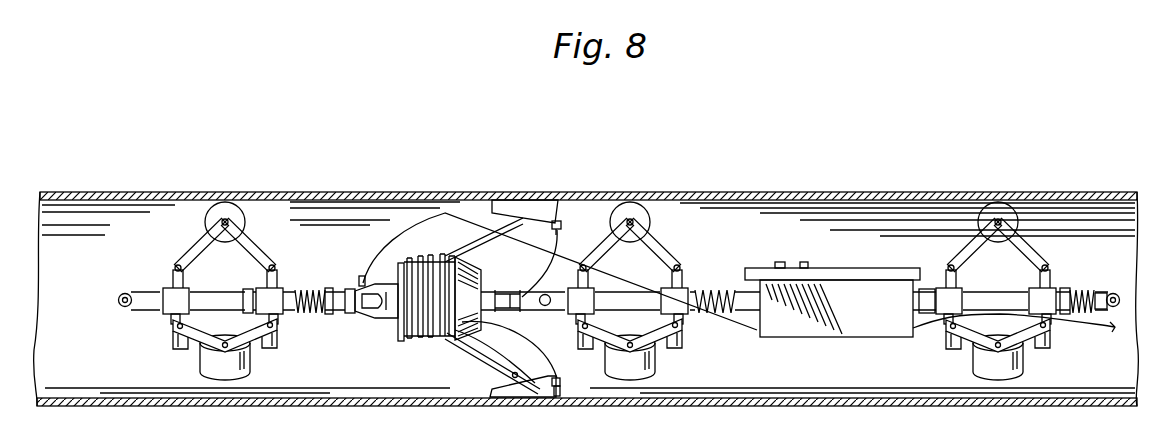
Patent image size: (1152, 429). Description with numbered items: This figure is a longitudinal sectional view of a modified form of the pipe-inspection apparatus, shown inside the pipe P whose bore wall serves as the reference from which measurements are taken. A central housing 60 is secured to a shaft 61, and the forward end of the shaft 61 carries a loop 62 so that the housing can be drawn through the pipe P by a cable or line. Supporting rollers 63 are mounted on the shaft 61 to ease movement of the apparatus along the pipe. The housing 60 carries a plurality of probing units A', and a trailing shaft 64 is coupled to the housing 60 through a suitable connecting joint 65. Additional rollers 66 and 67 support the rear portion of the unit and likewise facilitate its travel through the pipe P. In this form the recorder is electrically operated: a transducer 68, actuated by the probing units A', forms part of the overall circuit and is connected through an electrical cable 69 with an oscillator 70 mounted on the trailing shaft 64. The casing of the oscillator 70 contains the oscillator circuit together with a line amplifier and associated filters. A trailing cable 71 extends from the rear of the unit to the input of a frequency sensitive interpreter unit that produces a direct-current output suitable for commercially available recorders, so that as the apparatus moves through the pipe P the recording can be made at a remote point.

The pipe P is at (269, 192).
The probing units A' is at (503, 197).
The central housing 60 is at (363, 274).
The shaft 61 is at (146, 312).
The loop 62 is at (117, 300).
The supporting rollers 63 is at (221, 191).
The trailing shaft 64 is at (628, 263).
The connecting joint 65 is at (548, 296).
The additional rollers 66 is at (630, 382).
The additional rollers 67 is at (978, 349).
The transducer 68 is at (368, 320).
The electrical cable 69 is at (713, 328).
The oscillator 70 is at (840, 268).
The trailing cable 71 is at (1070, 322).